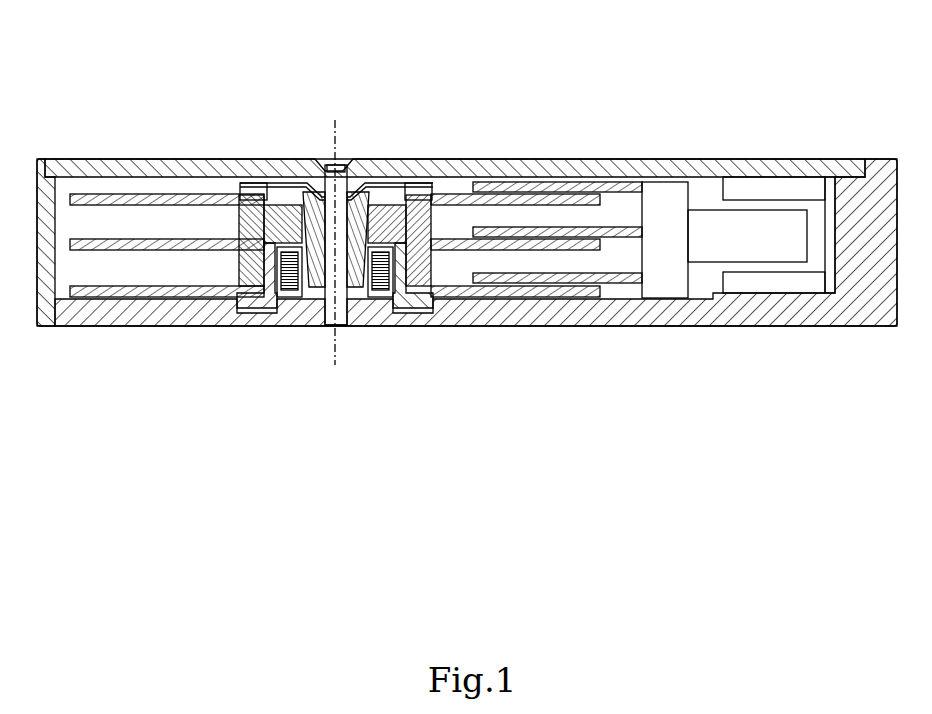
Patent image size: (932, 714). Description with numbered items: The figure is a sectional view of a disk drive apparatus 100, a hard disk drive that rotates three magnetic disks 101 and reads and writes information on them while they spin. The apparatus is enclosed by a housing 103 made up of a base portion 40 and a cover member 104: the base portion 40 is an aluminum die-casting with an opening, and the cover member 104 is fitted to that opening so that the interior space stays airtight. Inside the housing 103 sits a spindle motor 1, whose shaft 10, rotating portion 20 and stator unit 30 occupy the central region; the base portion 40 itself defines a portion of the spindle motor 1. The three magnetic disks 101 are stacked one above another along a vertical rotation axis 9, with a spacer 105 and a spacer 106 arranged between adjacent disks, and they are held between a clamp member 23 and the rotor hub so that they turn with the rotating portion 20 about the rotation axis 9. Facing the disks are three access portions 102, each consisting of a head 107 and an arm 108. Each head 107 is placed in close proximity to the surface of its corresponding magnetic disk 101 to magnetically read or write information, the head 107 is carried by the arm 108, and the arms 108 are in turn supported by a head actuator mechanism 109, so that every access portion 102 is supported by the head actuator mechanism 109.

The spindle motor 1 is at (366, 183).
The rotation axis 9 is at (328, 131).
The shaft 10 is at (342, 326).
The rotating portion 20 is at (305, 188).
The clamp member 23 is at (262, 193).
The stator unit 30 is at (280, 309).
The base portion 40 is at (877, 158).
The disk drive apparatus 100 is at (789, 77).
The magnetic disk 101 is at (74, 199).
The access portion 102 is at (613, 199).
The housing 103 is at (920, 110).
The cover member 104 is at (817, 159).
The spacer 105 is at (246, 216).
The spacer 106 is at (232, 298).
The head 107 is at (483, 291).
The arm 108 is at (520, 284).
The head actuator mechanism 109 is at (655, 195).